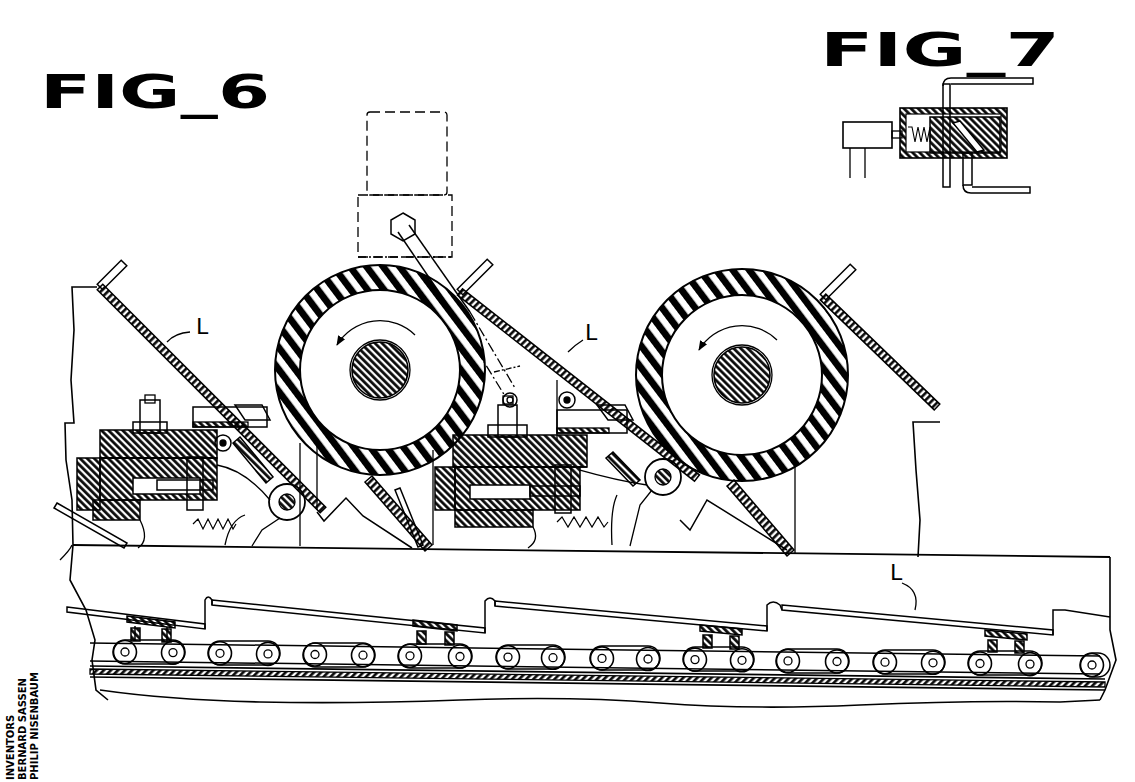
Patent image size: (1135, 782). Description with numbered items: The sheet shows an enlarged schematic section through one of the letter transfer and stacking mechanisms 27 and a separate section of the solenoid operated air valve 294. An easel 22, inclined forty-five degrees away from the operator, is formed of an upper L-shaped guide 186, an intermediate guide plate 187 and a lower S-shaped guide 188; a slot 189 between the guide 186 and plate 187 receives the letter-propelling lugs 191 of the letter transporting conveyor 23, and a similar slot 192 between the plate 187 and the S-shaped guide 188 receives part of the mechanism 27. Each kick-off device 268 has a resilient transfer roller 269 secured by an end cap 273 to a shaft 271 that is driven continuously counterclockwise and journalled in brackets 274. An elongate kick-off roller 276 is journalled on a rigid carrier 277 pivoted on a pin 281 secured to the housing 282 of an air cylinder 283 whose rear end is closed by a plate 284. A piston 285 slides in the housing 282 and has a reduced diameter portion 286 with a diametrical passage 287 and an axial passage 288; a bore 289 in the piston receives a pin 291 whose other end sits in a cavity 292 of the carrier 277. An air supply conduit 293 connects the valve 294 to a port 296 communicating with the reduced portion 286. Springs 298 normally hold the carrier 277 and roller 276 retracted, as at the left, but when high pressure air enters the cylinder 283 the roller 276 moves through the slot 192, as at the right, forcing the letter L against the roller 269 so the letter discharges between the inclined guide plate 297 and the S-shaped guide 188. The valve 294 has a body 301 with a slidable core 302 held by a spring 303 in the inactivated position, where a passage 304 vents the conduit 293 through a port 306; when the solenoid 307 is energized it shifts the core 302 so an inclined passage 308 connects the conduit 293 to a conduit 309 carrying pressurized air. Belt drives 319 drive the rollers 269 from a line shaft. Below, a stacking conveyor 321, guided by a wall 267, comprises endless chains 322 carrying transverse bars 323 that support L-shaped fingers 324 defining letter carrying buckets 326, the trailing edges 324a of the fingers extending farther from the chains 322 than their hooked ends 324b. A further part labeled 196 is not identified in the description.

In FIG. 6, the easel 22 is at (108, 280).
In FIG. 6, the letter transporting conveyor 23 is at (190, 425).
In FIG. 6, the letter transfer and stacking mechanism 27 is at (945, 340).
In FIG. 6, the upper L-shaped guide 186 is at (112, 300).
In FIG. 6, the intermediate guide plate 187 is at (240, 470).
In FIG. 6, the lower S-shaped guide 188 is at (385, 530).
In FIG. 6, the elongated slot 189 is at (232, 390).
In FIG. 6, the letter-propelling lugs 191 is at (248, 405).
In FIG. 6, the slot 192 is at (300, 480).
In FIG. 6, the stud head 196 is at (160, 398).
In FIG. 6, the wall 267 is at (968, 557).
In FIG. 6, the kick-off device 268 is at (470, 318).
In FIG. 6, the resilient transfer roller 269 is at (358, 280).
In FIG. 6, the shaft 271 is at (362, 359).
In FIG. 6, the end cap 273 is at (345, 386).
In FIG. 6, the bracket 274 is at (72, 338).
In FIG. 6, the kick-off roller 276 is at (292, 520).
In FIG. 6, the rigid carrier 277 is at (292, 521).
In FIG. 6, the pin 281 is at (410, 420).
In FIG. 6, the housing 282 is at (100, 436).
In FIG. 6, the air cylinder 283 is at (100, 447).
In FIG. 6, the closure plate 284 is at (90, 518).
In FIG. 6, the piston 285 is at (88, 514).
In FIG. 6, the reduced diameter central portion 286 is at (138, 548).
In FIG. 6, the diametrical passage 287 is at (105, 472).
In FIG. 6, the axially extending passage 288 is at (105, 486).
In FIG. 6, the bore 289 is at (175, 492).
In FIG. 6, the pin 291 is at (210, 528).
In FIG. 6, the cavity 292 is at (270, 500).
In FIG. 6, the air supply conduit 293 is at (518, 372).
In FIG. 7, the air supply conduit 293 is at (1033, 82).
In FIG. 6, the solenoid operated air valve 294 is at (452, 200).
In FIG. 7, the solenoid operated air valve 294 is at (905, 114).
In FIG. 6, the port 296 is at (136, 430).
In FIG. 6, the inclined letter guide plate 297 is at (856, 512).
In FIG. 6, the spring 298 is at (225, 545).
In FIG. 7, the valve body 301 is at (1003, 137).
In FIG. 7, the slidable core 302 is at (990, 125).
In FIG. 7, the spring 303 is at (916, 150).
In FIG. 7, the passage 304 is at (946, 125).
In FIG. 7, the port 306 is at (943, 187).
In FIG. 6, the solenoid 307 is at (446, 160).
In FIG. 7, the solenoid 307 is at (872, 150).
In FIG. 7, the inclined passage 308 is at (985, 160).
In FIG. 7, the conduit 309 is at (1022, 190).
In FIG. 6, the belt drive 319 is at (300, 443).
In FIG. 6, the stacking conveyor 321 is at (700, 668).
In FIG. 6, the endless chain 322 is at (905, 666).
In FIG. 6, the bar 323 is at (150, 616).
In FIG. 6, the L-shaped finger 324 is at (342, 603).
In FIG. 6, the trailing edge 324a is at (212, 612).
In FIG. 6, the hooked end 324b is at (202, 600).
In FIG. 6, the letter carrying bucket 326 is at (384, 612).